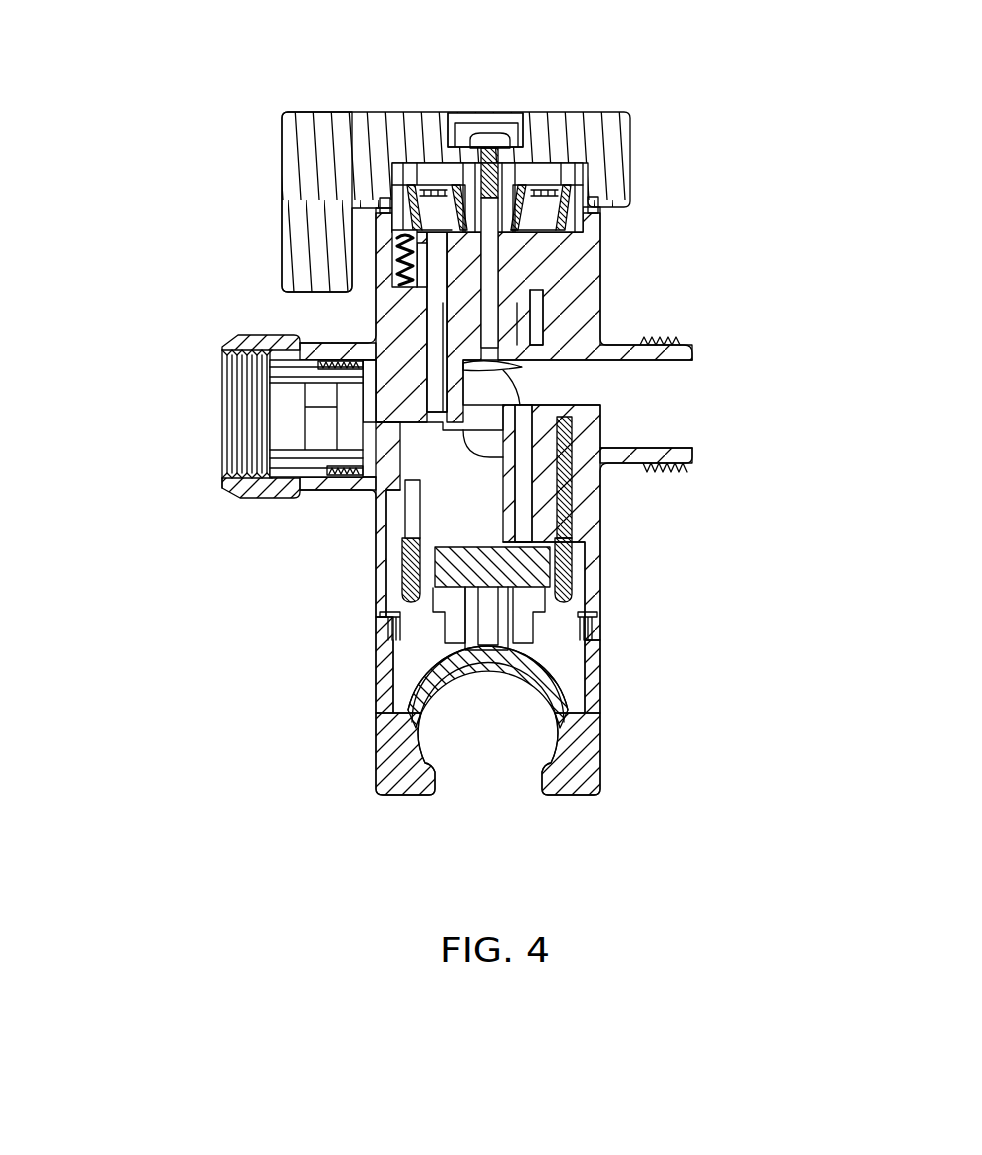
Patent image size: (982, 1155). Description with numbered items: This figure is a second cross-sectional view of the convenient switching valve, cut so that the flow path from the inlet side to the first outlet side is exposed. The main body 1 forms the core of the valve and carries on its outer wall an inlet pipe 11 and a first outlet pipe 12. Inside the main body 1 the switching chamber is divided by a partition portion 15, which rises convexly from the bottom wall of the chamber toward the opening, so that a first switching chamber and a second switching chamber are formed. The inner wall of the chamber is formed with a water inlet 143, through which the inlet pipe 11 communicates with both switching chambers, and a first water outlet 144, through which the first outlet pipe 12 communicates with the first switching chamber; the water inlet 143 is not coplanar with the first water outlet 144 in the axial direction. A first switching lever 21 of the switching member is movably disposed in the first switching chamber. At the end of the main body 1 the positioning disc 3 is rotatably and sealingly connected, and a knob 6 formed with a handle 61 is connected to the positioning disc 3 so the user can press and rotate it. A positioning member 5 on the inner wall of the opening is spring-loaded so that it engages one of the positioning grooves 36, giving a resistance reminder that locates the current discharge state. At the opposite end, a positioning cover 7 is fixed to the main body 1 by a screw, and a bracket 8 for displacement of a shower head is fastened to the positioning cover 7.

The main body 1 is at (592, 595).
The positioning disc 3 is at (565, 195).
The positioning member 5 is at (390, 250).
The knob 6 is at (411, 150).
The handle 61 is at (305, 262).
The positioning cover 7 is at (392, 573).
The bracket 8 is at (397, 753).
The inlet pipe 11 is at (227, 478).
The first outlet pipe 12 is at (687, 453).
The partition portion 15 is at (522, 300).
The first switching lever 21 is at (490, 387).
The positioning groove 36 is at (405, 232).
The water inlet 143 is at (398, 455).
The first water outlet 144 is at (592, 387).